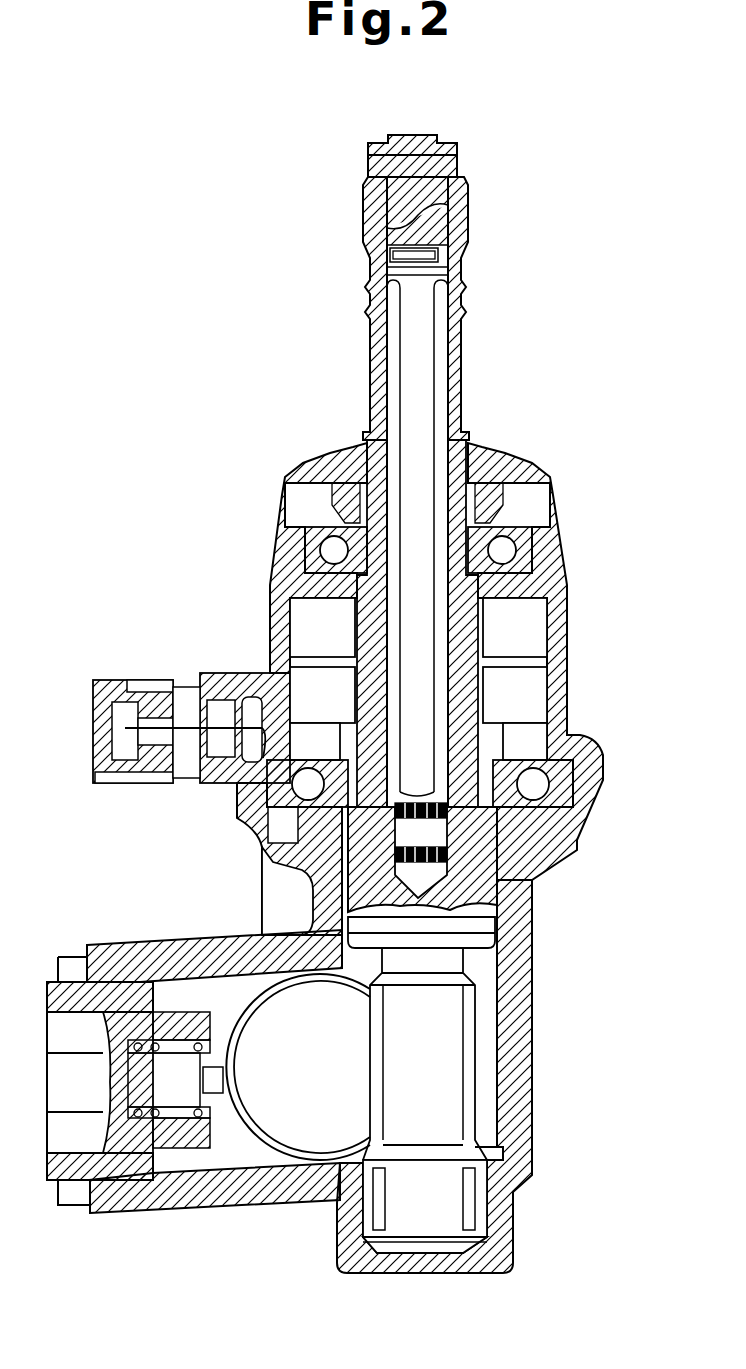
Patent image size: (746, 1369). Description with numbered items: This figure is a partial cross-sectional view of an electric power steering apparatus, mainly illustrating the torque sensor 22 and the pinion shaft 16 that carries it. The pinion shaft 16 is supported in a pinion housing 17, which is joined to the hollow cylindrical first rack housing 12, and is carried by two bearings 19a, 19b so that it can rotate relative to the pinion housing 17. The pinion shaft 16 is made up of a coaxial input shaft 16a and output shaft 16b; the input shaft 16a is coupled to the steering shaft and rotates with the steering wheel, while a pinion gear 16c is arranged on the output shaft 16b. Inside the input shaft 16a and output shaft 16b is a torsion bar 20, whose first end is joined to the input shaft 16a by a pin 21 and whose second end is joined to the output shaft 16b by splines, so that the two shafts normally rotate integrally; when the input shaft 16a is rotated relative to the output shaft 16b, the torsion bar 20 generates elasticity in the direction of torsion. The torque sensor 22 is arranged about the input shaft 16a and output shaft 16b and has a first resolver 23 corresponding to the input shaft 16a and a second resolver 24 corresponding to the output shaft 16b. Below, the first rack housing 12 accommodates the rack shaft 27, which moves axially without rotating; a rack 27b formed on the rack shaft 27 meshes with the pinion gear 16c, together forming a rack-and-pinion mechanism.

The first rack housing 12 is at (160, 1213).
The pinion shaft 16 is at (465, 225).
The input shaft 16a is at (465, 412).
The output shaft 16b is at (483, 916).
The pinion gear 16c is at (470, 1113).
The pinion housing 17 is at (607, 778).
The bearing 19a is at (548, 542).
The bearing 19b is at (238, 790).
The torsion bar 20 is at (418, 385).
The pin 21 is at (458, 162).
The torque sensor 22 is at (569, 656).
The first resolver 23 is at (297, 618).
The second resolver 24 is at (542, 698).
The rack shaft 27 is at (288, 1163).
The rack 27b is at (345, 1160).